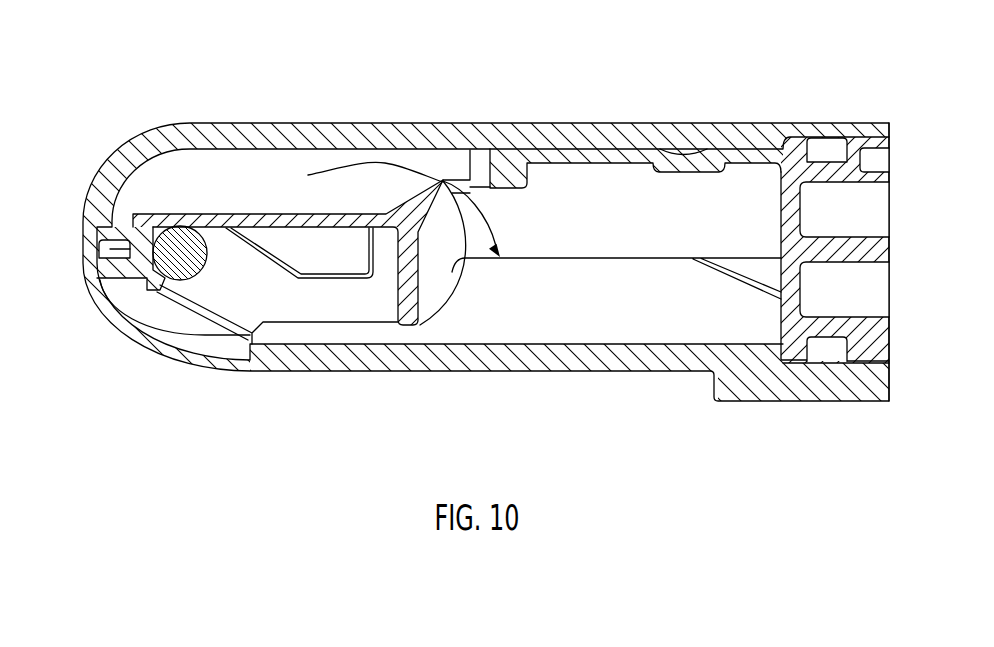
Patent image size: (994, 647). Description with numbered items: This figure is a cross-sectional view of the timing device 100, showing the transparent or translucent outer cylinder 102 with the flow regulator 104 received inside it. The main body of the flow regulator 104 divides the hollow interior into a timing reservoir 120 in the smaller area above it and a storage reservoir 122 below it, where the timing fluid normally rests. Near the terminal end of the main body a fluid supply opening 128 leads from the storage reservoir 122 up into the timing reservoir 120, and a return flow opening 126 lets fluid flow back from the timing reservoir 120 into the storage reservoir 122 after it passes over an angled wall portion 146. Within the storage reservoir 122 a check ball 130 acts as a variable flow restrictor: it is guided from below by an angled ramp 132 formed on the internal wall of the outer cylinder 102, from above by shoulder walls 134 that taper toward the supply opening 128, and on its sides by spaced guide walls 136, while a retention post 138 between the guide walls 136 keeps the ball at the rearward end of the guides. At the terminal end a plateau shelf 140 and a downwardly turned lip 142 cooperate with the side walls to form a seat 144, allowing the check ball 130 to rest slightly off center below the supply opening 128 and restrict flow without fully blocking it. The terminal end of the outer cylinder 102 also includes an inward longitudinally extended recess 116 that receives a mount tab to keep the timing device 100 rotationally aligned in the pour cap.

The timing device 100 is at (462, 243).
The outer cylinder 102 is at (337, 130).
The flow regulator 104 is at (605, 162).
The inward longitudinally extended recess 116 is at (164, 352).
The timing reservoir 120 is at (229, 176).
The storage reservoir 122 is at (479, 330).
The return flow opening 126 is at (467, 177).
The fluid supply opening 128 is at (176, 240).
The check ball 130 is at (180, 230).
The angled ramp 132 is at (217, 315).
The shoulder walls 134 is at (340, 253).
The guide walls 136 is at (363, 308).
The retention post 138 is at (413, 290).
The plateau shelf 140 is at (170, 288).
The downwardly turned lip 142 is at (155, 266).
The seat 144 is at (130, 245).
The angled wall portion 146 is at (422, 188).